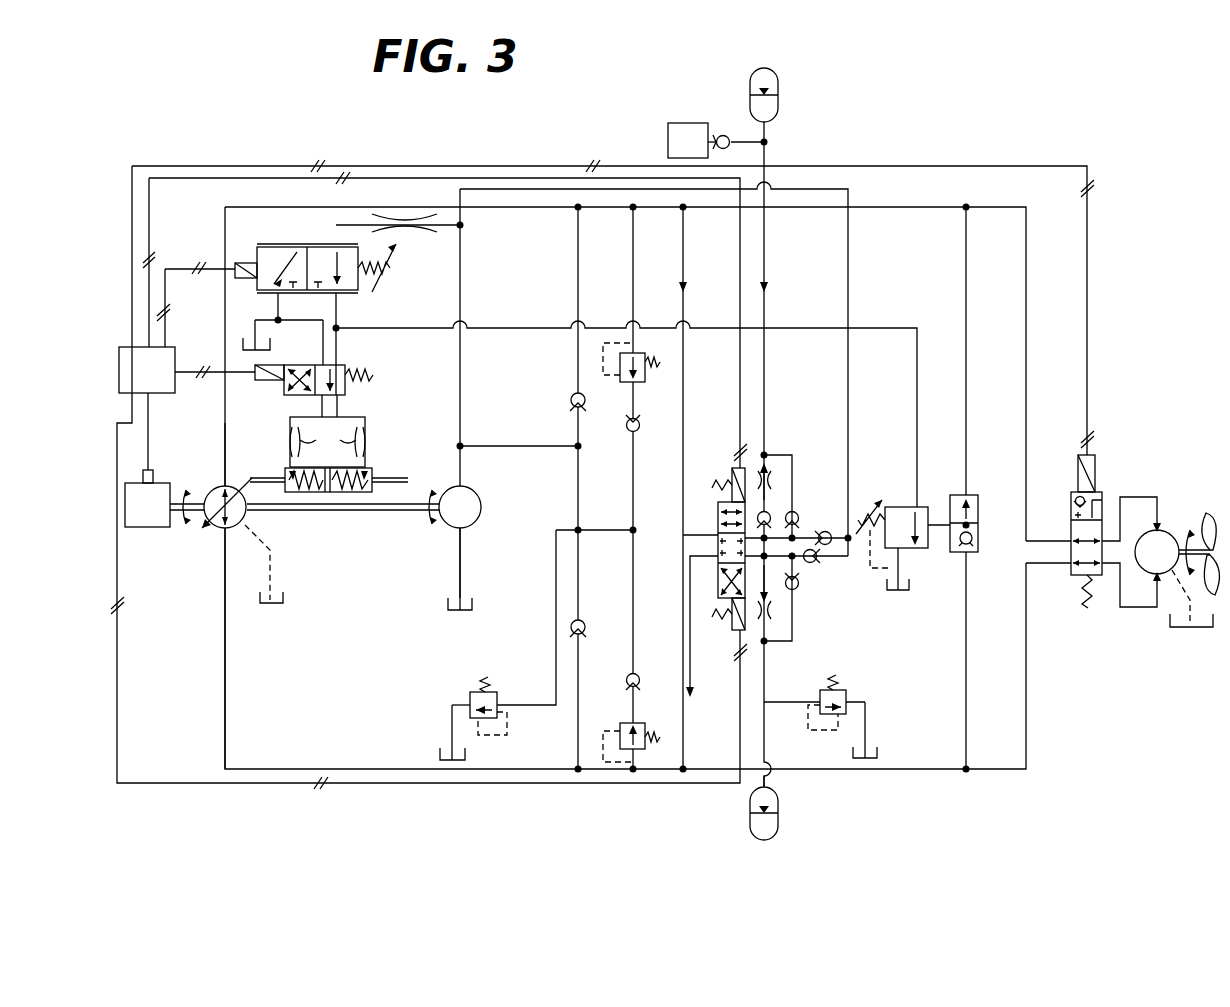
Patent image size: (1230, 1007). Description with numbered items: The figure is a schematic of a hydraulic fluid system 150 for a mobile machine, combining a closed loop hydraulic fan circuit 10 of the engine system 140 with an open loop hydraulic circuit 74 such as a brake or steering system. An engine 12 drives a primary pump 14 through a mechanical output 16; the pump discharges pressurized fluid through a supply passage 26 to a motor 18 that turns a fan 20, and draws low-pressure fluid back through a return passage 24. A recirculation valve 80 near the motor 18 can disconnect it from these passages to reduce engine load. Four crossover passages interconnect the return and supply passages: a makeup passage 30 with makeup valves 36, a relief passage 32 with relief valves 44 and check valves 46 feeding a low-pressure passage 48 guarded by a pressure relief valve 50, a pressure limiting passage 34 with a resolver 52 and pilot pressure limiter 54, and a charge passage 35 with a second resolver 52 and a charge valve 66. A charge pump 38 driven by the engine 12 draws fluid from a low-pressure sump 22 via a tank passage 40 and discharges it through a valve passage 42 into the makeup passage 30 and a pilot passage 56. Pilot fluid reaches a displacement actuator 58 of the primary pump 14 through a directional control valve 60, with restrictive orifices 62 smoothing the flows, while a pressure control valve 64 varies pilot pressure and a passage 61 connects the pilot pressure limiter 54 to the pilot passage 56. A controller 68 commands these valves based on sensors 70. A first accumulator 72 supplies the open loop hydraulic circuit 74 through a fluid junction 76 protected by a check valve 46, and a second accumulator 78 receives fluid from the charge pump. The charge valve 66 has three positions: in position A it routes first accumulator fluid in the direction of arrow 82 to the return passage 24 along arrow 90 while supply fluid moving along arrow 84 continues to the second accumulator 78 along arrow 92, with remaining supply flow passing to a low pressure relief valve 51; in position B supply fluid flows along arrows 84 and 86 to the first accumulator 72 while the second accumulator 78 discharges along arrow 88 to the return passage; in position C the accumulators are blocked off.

The hydraulic fan circuit 10 is at (1120, 280).
The engine 12 is at (150, 527).
The primary pump 14 is at (222, 487).
The mechanical output 16 is at (183, 516).
The motor 18 is at (1148, 562).
The fan 20 is at (1212, 512).
The low-pressure sump 22 is at (270, 344).
The return passage 24 is at (225, 690).
The supply passage 26 is at (225, 302).
The makeup passage 30 is at (582, 270).
The relief passage 32 is at (637, 270).
The pressure limiting passage 34 is at (970, 266).
The charge passage 35 is at (686, 364).
The makeup valve 36 is at (570, 392).
The charge pump 38 is at (451, 517).
The tank passage 40 is at (463, 532).
The valve passage 42 is at (512, 446).
The relief valve 44 is at (650, 385).
The check valve 46 is at (722, 135).
The low-pressure passage 48 is at (556, 534).
The pressure relief valve 50 is at (492, 690).
The low pressure relief valve 51 is at (840, 690).
The resolver 52 is at (978, 546).
The pilot pressure limiter 54 is at (905, 507).
The pilot passage 56 is at (462, 382).
The displacement actuator 58 is at (394, 470).
The directional control valve 60 is at (345, 368).
The passage 61 is at (915, 306).
The restrictive orifice 62 is at (437, 235).
The pressure control valve 64 is at (282, 244).
The charge valve 66 is at (714, 642).
The controller 68 is at (138, 378).
The sensor 70 is at (150, 470).
The first accumulator 72 is at (778, 112).
The open loop hydraulic circuit 74 is at (679, 152).
The fluid junction 76 is at (768, 142).
The second accumulator 78 is at (750, 803).
The recirculation valve 80 is at (1078, 472).
The arrow 82 is at (771, 266).
The arrow 84 is at (690, 266).
The arrow 86 is at (752, 490).
The arrow 88 is at (772, 582).
The arrow 90 is at (693, 690).
The arrow 92 is at (771, 614).
The engine system 140 is at (186, 796).
The hydraulic fluid system 150 is at (1073, 109).